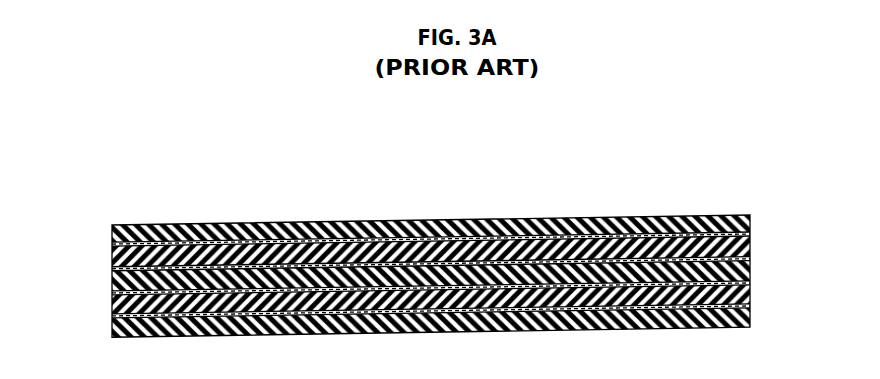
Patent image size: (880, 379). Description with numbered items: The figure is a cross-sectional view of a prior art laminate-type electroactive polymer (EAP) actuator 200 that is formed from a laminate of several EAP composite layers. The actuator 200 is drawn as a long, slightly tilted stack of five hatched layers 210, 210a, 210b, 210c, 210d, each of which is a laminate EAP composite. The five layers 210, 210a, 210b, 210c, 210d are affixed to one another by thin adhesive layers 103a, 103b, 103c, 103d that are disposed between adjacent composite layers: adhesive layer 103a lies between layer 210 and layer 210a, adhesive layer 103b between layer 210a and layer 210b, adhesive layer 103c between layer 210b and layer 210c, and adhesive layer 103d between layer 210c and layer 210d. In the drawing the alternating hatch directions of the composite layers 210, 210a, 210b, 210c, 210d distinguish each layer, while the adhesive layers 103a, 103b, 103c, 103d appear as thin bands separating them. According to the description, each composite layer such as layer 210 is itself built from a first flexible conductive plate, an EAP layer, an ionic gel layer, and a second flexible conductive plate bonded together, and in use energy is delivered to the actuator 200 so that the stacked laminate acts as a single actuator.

The EAP actuator 200 is at (136, 155).
The layer 210 is at (431, 228).
The layer 210a is at (431, 251).
The layer 210b is at (431, 276).
The layer 210c is at (431, 299).
The layer 210d is at (431, 322).
The adhesive layer 103a is at (431, 239).
The adhesive layer 103b is at (431, 264).
The adhesive layer 103c is at (431, 288).
The adhesive layer 103d is at (431, 311).